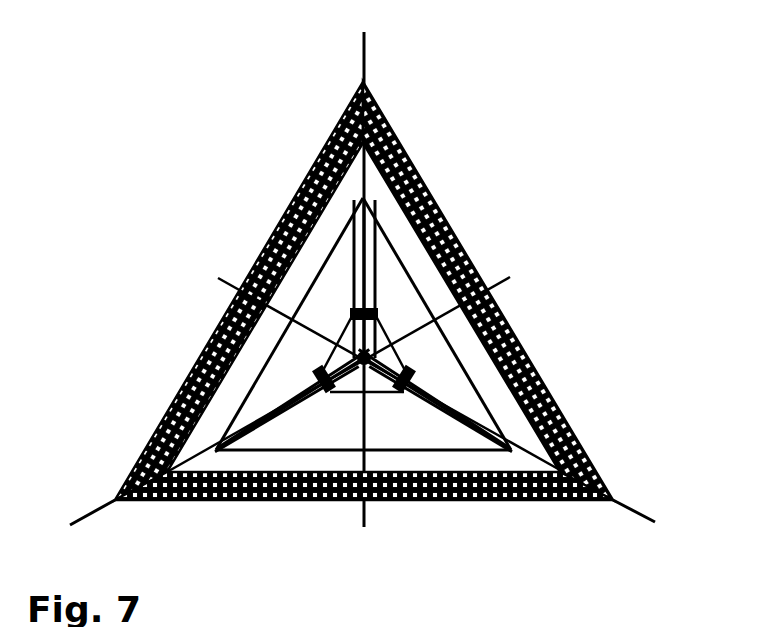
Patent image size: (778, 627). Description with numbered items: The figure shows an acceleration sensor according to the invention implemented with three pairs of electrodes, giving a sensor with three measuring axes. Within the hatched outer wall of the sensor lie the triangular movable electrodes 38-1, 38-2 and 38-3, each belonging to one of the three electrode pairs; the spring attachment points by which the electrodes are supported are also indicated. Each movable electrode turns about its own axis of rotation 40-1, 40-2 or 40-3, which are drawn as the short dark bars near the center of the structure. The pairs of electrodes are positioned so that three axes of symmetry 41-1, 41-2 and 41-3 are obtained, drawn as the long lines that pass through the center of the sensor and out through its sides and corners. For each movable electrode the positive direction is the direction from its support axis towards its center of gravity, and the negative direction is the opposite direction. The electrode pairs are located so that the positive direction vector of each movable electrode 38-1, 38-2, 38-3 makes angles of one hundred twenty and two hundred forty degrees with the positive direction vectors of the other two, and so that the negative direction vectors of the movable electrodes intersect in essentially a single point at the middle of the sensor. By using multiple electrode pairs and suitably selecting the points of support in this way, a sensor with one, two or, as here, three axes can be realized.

The axis of symmetry 41-1 is at (364, 72).
The axis of symmetry 41-2 is at (493, 280).
The axis of symmetry 41-3 is at (638, 507).
The triangular movable electrode 38-1 is at (478, 378).
The triangular movable electrode 38-2 is at (357, 452).
The triangular movable electrode 38-3 is at (352, 316).
The axis of rotation 40-1 is at (402, 362).
The axis of rotation 40-2 is at (352, 390).
The axis of rotation 40-3 is at (344, 340).